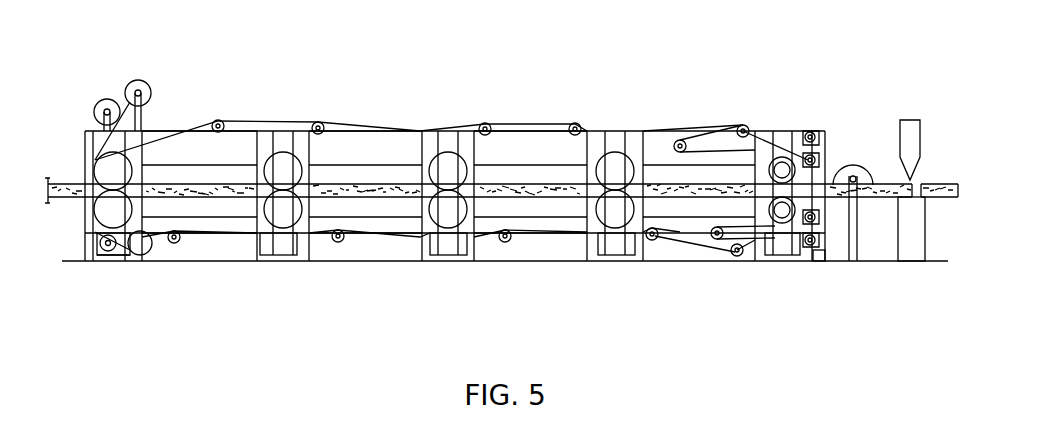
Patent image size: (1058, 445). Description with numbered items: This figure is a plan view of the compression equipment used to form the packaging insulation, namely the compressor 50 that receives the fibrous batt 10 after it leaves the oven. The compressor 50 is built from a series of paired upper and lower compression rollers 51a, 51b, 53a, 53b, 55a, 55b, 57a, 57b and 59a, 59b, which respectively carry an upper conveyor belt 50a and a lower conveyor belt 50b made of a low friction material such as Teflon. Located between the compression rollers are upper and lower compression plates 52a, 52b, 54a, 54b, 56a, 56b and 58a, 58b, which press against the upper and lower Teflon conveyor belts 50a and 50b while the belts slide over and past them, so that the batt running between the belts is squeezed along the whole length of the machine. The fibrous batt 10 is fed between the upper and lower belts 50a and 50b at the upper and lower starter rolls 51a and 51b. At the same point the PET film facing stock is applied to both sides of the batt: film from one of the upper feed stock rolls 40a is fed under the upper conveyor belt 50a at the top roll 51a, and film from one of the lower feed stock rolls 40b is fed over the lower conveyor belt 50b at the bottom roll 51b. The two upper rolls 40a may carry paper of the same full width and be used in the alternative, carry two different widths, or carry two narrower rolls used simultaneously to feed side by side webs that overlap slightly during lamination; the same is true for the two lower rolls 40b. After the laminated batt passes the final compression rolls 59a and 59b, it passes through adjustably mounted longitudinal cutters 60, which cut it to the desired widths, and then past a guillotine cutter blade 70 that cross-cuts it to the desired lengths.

The fibrous batt 10 is at (393, 185).
The upper feed stock rolls 40a is at (128, 84).
The lower feed stock rolls 40b is at (120, 255).
The compressor 50 is at (641, 48).
The upper conveyor belt 50a is at (221, 185).
The lower conveyor belt 50b is at (233, 200).
The upper starter roll 51a is at (95, 178).
The lower starter roll 51b is at (93, 222).
The upper compression plate 52a is at (186, 150).
The lower compression plate 52b is at (205, 232).
The upper compression roller 53a is at (300, 153).
The lower compression roller 53b is at (297, 215).
The upper compression plate 54a is at (368, 150).
The lower compression plate 54b is at (388, 227).
The upper compression roller 55a is at (442, 140).
The lower compression roller 55b is at (462, 190).
The upper compression plate 56a is at (547, 150).
The lower compression plate 56b is at (548, 227).
The upper compression roller 57a is at (637, 163).
The lower compression roller 57b is at (633, 207).
The upper compression plate 58a is at (663, 153).
The lower compression plate 58b is at (690, 227).
The final upper compression roll 59a is at (763, 167).
The final lower compression roll 59b is at (773, 225).
The longitudinal cutters 60 is at (853, 163).
The guillotine cutter blade 70 is at (915, 145).